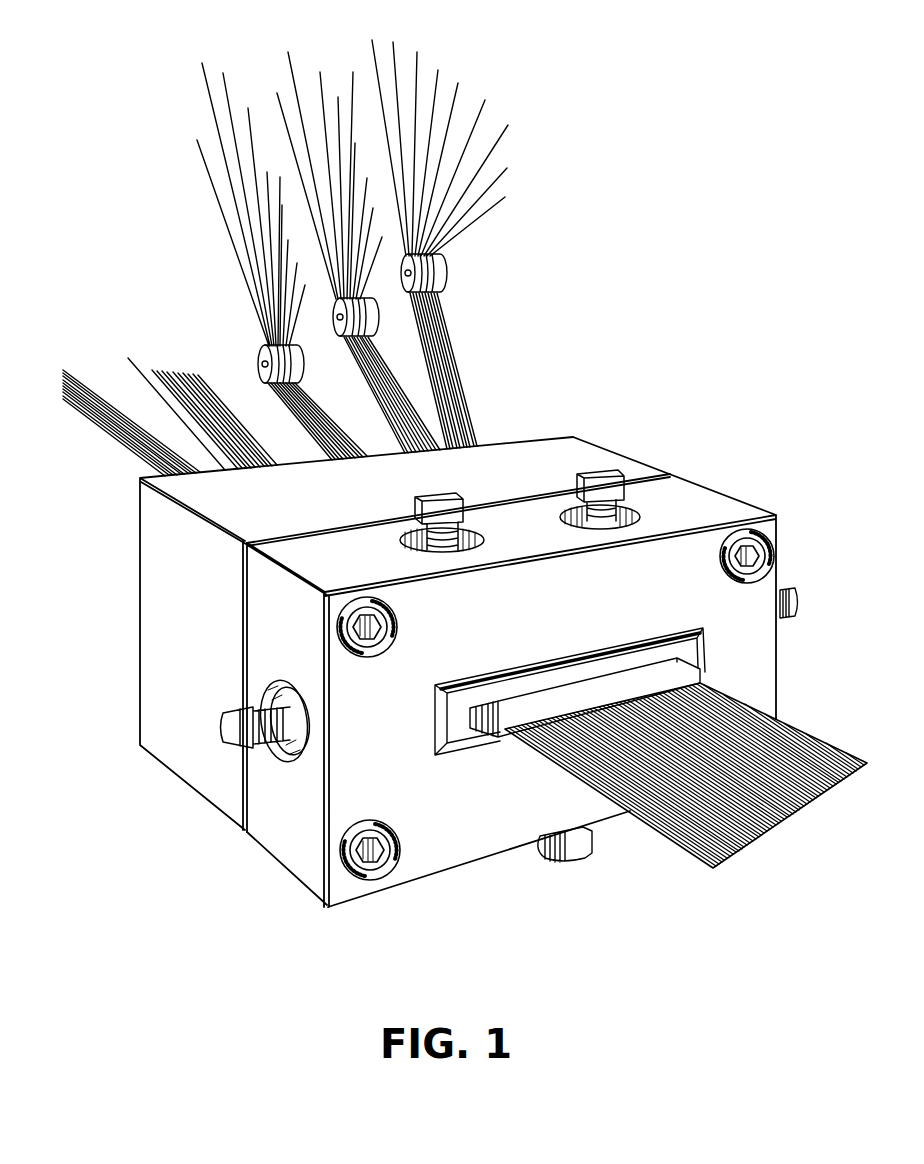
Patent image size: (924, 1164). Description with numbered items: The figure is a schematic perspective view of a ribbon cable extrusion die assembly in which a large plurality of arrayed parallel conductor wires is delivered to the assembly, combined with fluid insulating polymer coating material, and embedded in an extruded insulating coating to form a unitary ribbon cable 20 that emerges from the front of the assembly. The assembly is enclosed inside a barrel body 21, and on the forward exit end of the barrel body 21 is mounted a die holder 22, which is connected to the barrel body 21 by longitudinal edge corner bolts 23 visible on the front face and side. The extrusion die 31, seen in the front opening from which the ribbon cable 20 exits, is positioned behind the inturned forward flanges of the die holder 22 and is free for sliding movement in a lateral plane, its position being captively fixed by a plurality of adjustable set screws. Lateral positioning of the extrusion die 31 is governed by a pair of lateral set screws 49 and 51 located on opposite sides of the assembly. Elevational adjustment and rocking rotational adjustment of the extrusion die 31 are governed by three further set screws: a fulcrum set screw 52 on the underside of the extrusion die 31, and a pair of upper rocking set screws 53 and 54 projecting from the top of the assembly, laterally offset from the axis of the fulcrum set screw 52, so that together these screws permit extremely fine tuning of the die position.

The ribbon cable 20 is at (783, 752).
The barrel body 21 is at (193, 752).
The die holder 22 is at (295, 842).
The longitudinal edge corner bolts 23 is at (388, 635).
The extrusion die 31 is at (572, 692).
The lateral set screw 49 is at (226, 716).
The lateral set screw 51 is at (797, 595).
The fulcrum set screw 52 is at (565, 850).
The upper rocking set screw 53 is at (437, 498).
The upper rocking set screw 54 is at (598, 472).